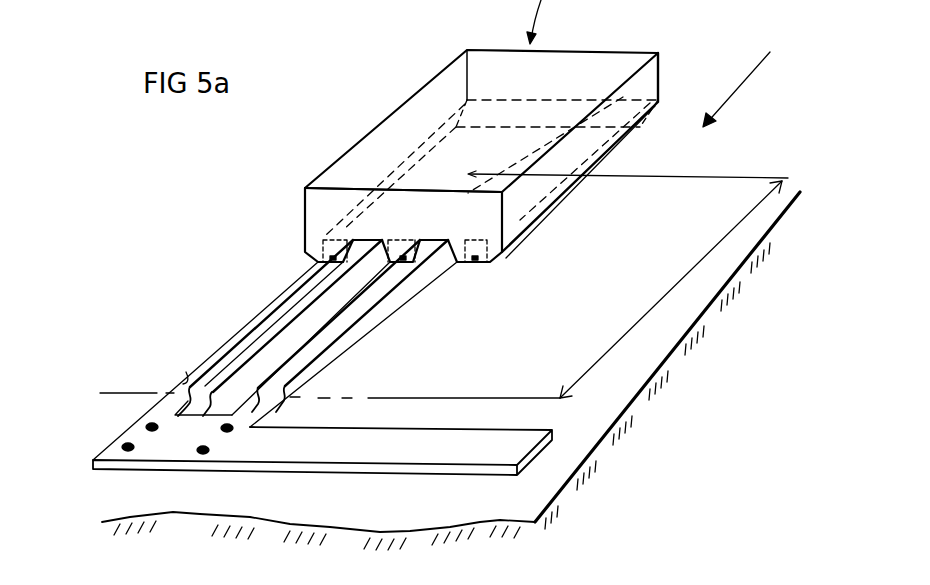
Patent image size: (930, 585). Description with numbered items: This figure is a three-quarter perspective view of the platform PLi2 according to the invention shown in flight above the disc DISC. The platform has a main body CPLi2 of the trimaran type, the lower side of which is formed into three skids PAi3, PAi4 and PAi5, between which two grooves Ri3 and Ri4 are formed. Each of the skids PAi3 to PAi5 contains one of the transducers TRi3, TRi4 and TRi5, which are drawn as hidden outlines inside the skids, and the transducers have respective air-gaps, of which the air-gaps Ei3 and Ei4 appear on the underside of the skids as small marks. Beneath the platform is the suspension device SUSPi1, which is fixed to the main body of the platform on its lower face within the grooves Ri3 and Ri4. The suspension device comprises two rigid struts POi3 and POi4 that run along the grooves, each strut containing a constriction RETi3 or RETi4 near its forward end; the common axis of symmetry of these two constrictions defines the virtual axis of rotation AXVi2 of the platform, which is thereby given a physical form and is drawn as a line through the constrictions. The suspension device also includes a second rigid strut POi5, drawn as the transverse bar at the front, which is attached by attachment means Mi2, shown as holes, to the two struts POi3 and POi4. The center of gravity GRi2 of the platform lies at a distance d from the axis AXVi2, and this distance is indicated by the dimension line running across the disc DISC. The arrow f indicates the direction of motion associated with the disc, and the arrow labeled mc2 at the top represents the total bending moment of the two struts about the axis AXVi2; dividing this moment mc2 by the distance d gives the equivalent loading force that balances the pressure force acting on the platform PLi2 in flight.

The platform PLi2 is at (625, 100).
The skid PAi3 is at (378, 186).
The skid PAi5 is at (391, 238).
The skid PAi4 is at (530, 233).
The groove Ri3 is at (318, 296).
The groove Ri4 is at (447, 250).
The transducer TRi3 is at (316, 261).
The transducer TRi5 is at (406, 241).
The transducer TRi4 is at (503, 262).
The air-gap Ei3 is at (407, 298).
The air-gap Ei4 is at (475, 261).
The center of gravity GRi2 is at (628, 163).
The main body CPLi2 is at (557, 182).
The suspension SUSPi1 is at (227, 358).
The strut POi3 is at (228, 357).
The strut POi4 is at (355, 361).
The second rigid strut POi5 is at (448, 427).
The constriction RETi3 is at (183, 384).
The constriction RETi4 is at (276, 399).
The attachment means Mi2 is at (128, 446).
The virtual axis of rotation AXVi2 is at (438, 398).
The disc DISC is at (672, 350).
The distance d is at (671, 289).
The direction of force f is at (736, 89).
The total bending moment mc2 is at (550, 22).